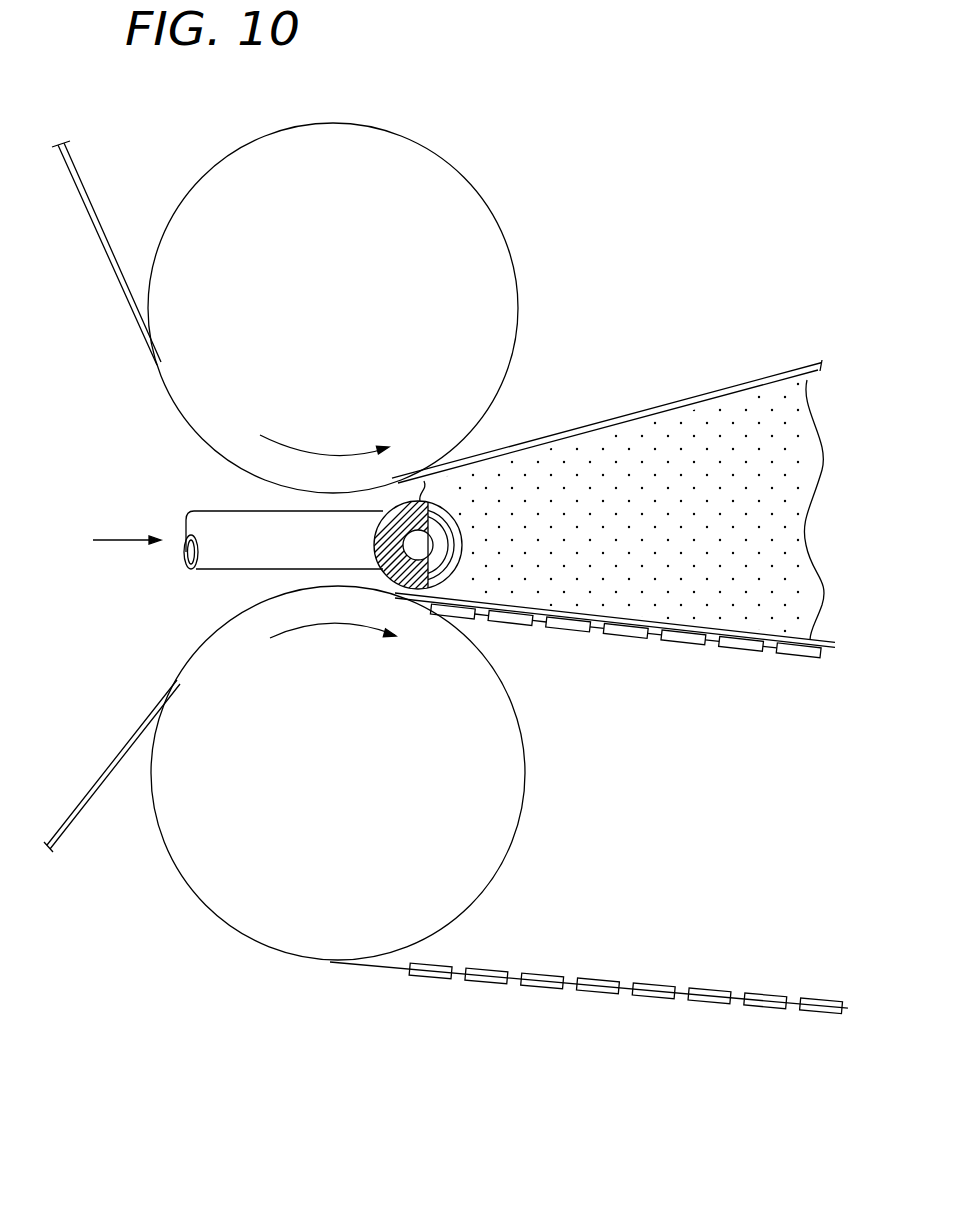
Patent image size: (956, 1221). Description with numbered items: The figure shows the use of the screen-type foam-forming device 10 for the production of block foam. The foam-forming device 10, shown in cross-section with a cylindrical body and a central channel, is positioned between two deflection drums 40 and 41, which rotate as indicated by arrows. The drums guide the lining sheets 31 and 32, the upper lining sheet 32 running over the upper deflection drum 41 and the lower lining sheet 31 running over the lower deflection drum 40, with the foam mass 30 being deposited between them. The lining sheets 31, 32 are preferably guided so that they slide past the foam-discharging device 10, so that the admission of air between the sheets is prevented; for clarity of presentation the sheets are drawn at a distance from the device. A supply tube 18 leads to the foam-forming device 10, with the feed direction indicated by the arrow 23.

The foam-forming device 10 is at (478, 564).
The hollow tube 18 is at (225, 565).
The feed direction 23 is at (118, 540).
The filler layer 30 is at (645, 597).
The lining sheet 31 is at (724, 640).
The lining sheet 32 is at (722, 392).
The deflection drum 40 is at (517, 770).
The deflection drum 41 is at (497, 232).